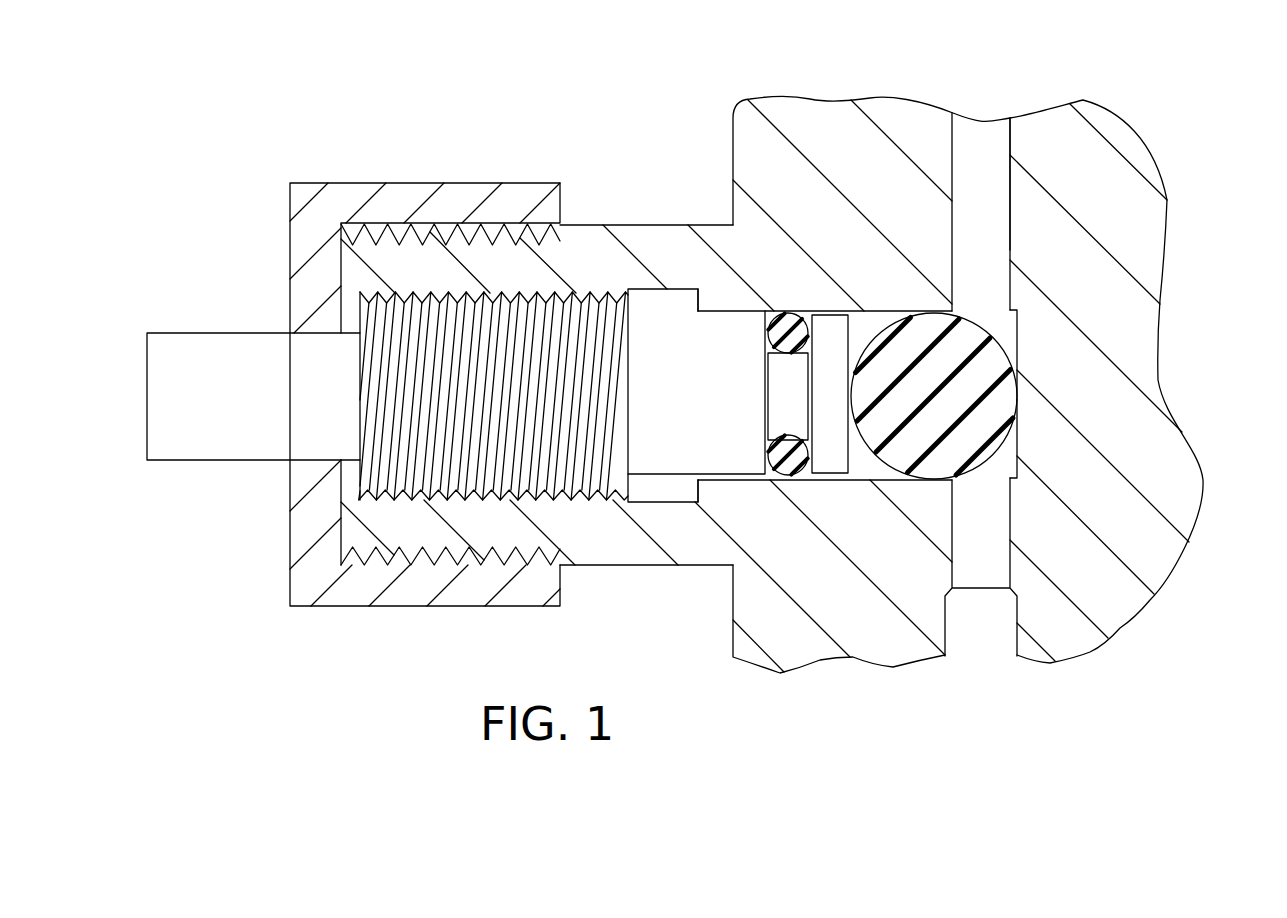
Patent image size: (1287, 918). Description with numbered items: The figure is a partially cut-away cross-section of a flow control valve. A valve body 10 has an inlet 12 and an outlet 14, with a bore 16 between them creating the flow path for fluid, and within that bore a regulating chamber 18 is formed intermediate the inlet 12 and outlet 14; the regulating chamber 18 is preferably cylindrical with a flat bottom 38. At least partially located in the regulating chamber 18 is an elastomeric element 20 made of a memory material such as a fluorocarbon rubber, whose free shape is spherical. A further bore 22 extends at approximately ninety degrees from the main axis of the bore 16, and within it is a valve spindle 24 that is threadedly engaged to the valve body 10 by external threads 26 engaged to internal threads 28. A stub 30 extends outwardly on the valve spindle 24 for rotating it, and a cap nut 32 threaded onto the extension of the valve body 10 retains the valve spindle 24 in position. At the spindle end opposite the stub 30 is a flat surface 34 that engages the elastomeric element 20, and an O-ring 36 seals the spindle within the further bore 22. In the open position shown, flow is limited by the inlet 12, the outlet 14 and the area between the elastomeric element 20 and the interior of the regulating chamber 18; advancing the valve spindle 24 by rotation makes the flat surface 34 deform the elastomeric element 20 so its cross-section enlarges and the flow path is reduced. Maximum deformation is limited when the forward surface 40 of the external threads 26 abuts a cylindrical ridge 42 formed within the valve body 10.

The valve body 10 is at (855, 643).
The inlet 12 is at (987, 162).
The outlet 14 is at (997, 558).
The bore 16 is at (1010, 248).
The regulating chamber 18 is at (1010, 329).
The elastomeric element 20 is at (883, 322).
The further bore 22 is at (772, 540).
The valve spindle 24 is at (740, 463).
The external threads 26 is at (423, 475).
The internal threads 28 is at (587, 292).
The stub 30 is at (217, 442).
The cap nut 32 is at (420, 182).
The flat surface 34 is at (870, 481).
The O-ring 36 is at (760, 297).
The flat bottom 38 is at (1020, 458).
The forward surface 40 is at (637, 303).
The cylindrical ridge 42 is at (690, 503).